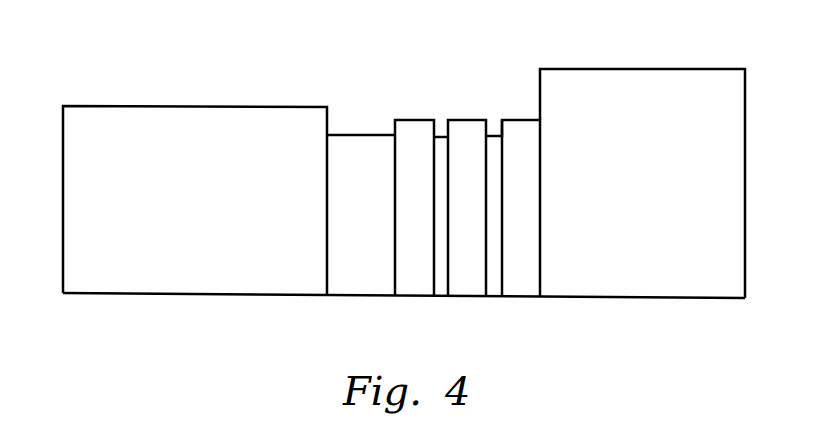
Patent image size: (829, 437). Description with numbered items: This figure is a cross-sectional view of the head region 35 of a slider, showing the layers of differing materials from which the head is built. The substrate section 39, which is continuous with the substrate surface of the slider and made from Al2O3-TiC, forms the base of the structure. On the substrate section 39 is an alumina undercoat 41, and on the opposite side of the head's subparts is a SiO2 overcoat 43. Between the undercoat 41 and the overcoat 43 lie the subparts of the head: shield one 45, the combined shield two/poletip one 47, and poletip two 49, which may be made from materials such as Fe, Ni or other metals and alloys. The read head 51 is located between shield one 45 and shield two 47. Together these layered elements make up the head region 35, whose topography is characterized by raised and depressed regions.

The head region 35 is at (234, 50).
The substrate section 39 is at (168, 278).
The undercoat 41 is at (347, 283).
The overcoat 43 is at (695, 283).
The shield 1 45 is at (410, 283).
The shield 2/poletip 1 47 is at (473, 283).
The poletip 2 49 is at (530, 283).
The read head 51 is at (443, 137).